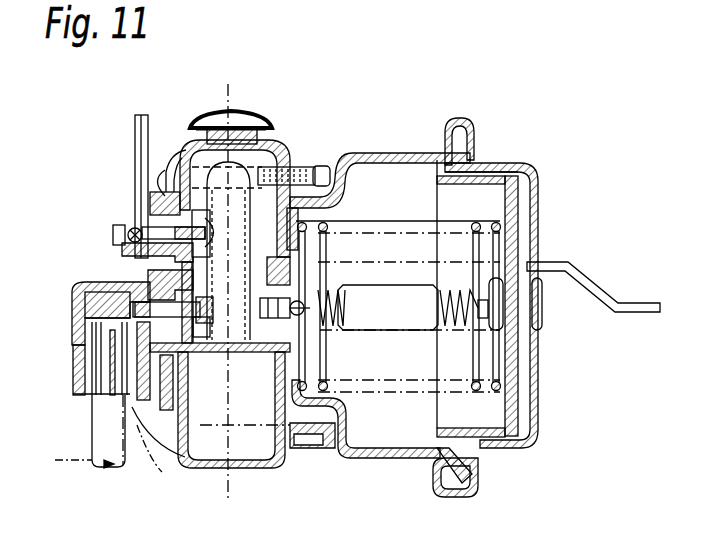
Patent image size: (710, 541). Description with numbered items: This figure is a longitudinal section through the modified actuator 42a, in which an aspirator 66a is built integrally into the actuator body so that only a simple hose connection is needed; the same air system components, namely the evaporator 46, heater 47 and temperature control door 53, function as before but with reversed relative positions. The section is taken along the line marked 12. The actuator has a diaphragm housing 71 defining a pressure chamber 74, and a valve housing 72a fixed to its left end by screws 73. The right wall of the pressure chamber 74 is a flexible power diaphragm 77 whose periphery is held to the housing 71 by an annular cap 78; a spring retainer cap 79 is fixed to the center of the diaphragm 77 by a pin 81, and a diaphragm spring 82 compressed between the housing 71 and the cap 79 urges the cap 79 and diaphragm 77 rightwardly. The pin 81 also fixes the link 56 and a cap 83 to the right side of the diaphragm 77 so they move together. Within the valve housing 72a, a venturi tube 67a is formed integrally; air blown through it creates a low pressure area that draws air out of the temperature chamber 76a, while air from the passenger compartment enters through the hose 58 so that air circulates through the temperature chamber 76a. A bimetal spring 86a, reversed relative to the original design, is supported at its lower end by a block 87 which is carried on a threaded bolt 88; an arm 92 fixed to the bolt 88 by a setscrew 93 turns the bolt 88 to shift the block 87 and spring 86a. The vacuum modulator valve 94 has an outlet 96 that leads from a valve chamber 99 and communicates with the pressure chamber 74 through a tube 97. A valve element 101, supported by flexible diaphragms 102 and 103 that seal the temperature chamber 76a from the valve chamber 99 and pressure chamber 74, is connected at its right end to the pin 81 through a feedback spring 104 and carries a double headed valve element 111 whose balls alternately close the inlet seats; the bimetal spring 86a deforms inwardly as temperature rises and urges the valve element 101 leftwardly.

The section line 12 is at (228, 60).
The actuator 42a is at (334, 113).
The evaporator 46 is at (432, 2).
The heater 47 is at (300, 2).
The door 53 is at (345, 2).
The link 56 is at (642, 312).
The hose 58 is at (74, 461).
The aspirator 66a is at (132, 476).
The venturi tube 67a is at (224, 415).
The diaphragm housing 71 is at (384, 152).
The valve housing 72a is at (295, 122).
The screws 73 is at (170, 168).
The pressure chamber 74 is at (398, 204).
The temperature chamber 76a is at (300, 176).
The power diaphragm 77 is at (488, 165).
The annular cap 78 is at (470, 136).
The spring retainer cap 79 is at (540, 168).
The pin 81 is at (540, 312).
The diaphragm spring 82 is at (368, 238).
The cap 83 is at (538, 214).
The bimetal spring 86a is at (252, 117).
The block 87 is at (187, 222).
The bolt 88 is at (125, 250).
The arm 92 is at (134, 136).
The setscrew 93 is at (128, 228).
The vacuum modulator valve 94 is at (62, 314).
The outlet 96 is at (150, 370).
The tube 97 is at (158, 470).
The valve chamber 99 is at (162, 284).
The valve element 101 is at (238, 312).
The diaphragm 102 is at (198, 297).
The diaphragm 103 is at (300, 270).
The feedback spring 104 is at (405, 290).
The double headed valve element 111 is at (100, 335).